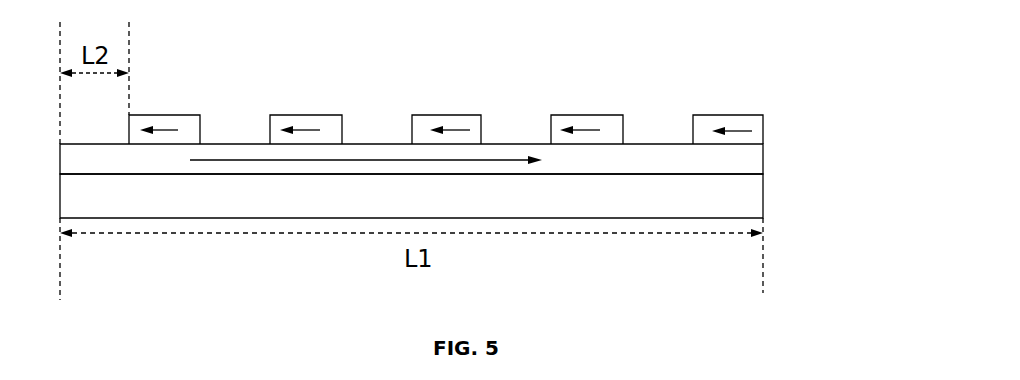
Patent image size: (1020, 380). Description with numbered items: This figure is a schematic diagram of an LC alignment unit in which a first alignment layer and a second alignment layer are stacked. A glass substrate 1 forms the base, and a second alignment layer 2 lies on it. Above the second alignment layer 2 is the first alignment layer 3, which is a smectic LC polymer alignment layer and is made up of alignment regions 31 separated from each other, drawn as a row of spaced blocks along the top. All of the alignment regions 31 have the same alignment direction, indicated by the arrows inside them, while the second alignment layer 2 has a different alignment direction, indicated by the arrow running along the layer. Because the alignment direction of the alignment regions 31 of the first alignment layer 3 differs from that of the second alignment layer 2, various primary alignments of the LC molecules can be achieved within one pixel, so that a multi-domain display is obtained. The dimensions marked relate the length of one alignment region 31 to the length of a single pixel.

The glass substrate 1 is at (745, 198).
The second alignment layer 2 is at (748, 160).
The first alignment layer 3 is at (420, 119).
The alignment regions 31 is at (728, 120).